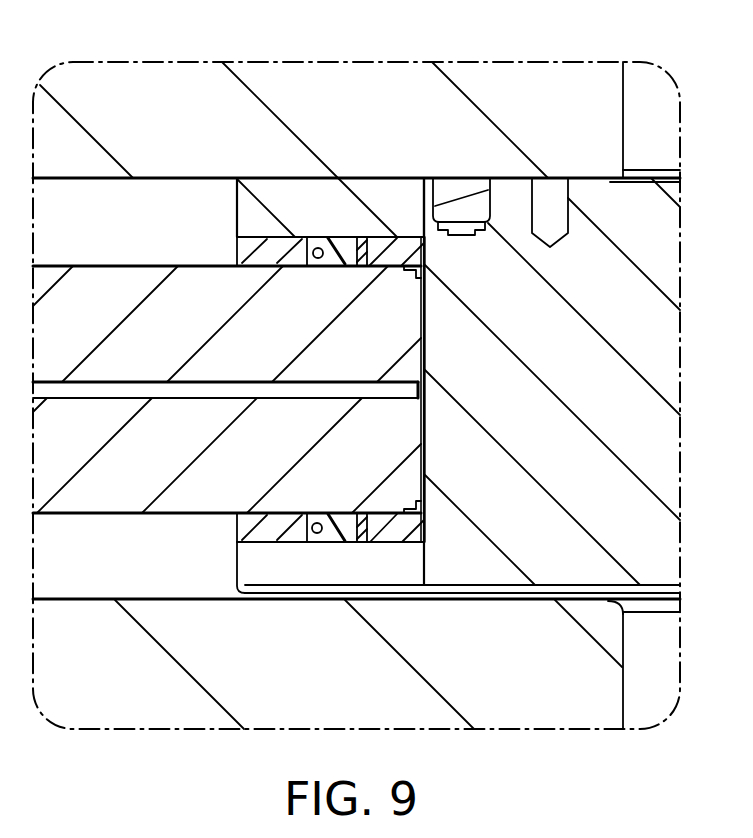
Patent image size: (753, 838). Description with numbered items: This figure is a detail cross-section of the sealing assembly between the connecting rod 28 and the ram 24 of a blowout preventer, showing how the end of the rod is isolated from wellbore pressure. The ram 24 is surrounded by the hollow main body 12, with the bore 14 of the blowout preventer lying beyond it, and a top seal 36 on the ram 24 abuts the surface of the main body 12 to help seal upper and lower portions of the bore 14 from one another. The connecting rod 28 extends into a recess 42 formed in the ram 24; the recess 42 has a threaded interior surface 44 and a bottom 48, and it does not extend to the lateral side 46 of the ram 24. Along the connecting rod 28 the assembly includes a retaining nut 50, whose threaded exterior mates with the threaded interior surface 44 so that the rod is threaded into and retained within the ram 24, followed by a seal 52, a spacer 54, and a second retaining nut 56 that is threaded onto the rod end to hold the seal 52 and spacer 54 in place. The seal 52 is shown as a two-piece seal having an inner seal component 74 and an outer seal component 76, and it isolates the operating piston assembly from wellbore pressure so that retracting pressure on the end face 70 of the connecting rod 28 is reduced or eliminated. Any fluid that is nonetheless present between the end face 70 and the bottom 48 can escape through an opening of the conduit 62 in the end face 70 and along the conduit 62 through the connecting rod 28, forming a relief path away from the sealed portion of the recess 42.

The main body 12 is at (303, 85).
The bore 14 is at (623, 112).
The ram 24 is at (307, 195).
The top seal 36 is at (463, 190).
The end face 70 is at (422, 311).
The recess 42 is at (315, 260).
The conduit 62 is at (97, 385).
The bottom 48 is at (424, 352).
The threaded interior surface 44 is at (318, 600).
The connecting rod 28 is at (155, 513).
The retaining nut 56 is at (424, 545).
The side 46 is at (252, 597).
The retaining nut 50 is at (290, 542).
The inner seal component 74 is at (308, 542).
The outer seal component 76 is at (318, 540).
The seal 52 is at (345, 556).
The spacer 54 is at (360, 542).